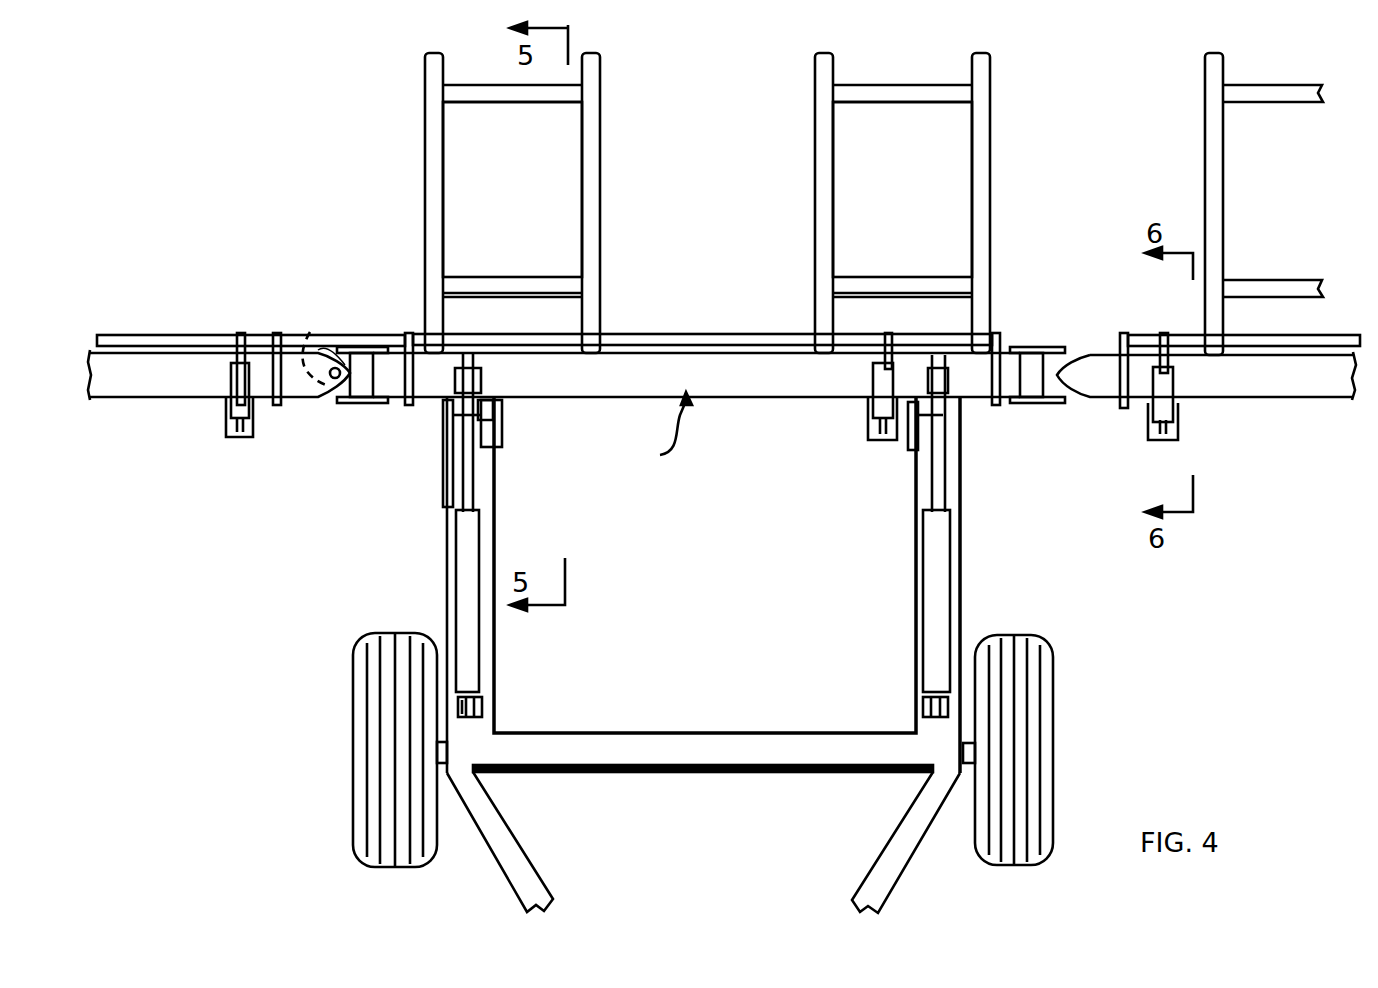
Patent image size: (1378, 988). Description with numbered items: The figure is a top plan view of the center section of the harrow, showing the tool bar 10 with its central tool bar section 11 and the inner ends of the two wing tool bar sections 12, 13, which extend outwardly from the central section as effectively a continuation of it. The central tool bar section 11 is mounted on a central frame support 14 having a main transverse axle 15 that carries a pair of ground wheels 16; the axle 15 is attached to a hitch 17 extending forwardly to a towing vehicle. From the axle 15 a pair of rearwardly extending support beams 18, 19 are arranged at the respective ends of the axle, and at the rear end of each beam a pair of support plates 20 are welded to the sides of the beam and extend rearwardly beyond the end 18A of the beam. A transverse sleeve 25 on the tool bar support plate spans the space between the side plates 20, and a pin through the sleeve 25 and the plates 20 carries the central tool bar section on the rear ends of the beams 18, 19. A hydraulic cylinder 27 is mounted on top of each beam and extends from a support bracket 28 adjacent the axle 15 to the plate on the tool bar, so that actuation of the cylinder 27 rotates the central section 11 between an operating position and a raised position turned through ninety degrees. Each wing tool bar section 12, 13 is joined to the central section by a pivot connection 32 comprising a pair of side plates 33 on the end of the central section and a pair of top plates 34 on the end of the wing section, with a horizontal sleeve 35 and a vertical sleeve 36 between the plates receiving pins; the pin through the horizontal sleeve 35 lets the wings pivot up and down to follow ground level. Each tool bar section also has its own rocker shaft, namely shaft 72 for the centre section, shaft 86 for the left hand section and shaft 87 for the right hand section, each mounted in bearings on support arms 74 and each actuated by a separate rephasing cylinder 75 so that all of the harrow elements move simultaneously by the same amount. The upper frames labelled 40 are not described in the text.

The tool bar 10 is at (656, 433).
The central tool bar section 11 is at (737, 398).
The wing tool bar section 12 is at (219, 401).
The wing tool bar section 13 is at (1290, 387).
The central frame support 14 is at (702, 713).
The main transverse axle 15 is at (783, 752).
The ground wheels 16 is at (365, 680).
The hitch 17 is at (513, 845).
The support beam 18 is at (448, 542).
The end of the beam 18A is at (496, 446).
The support beam 19 is at (962, 510).
The support plates 20 is at (440, 432).
The transverse sleeve 25 is at (492, 396).
The hydraulic cylinder 27 is at (466, 630).
The support bracket 28 is at (482, 707).
The pivot connection 32 is at (358, 340).
The side plates 33 is at (373, 348).
The top plates 34 is at (333, 388).
The horizontal sleeve 35 is at (340, 352).
The vertical sleeve 36 is at (300, 346).
The tool frame section 40 is at (632, 198).
The rocker shaft 72 is at (678, 338).
The support arms 74 is at (1122, 393).
The cylinder 75 is at (1210, 420).
The rocker shaft 86 is at (251, 310).
The rocker shaft 87 is at (1288, 340).